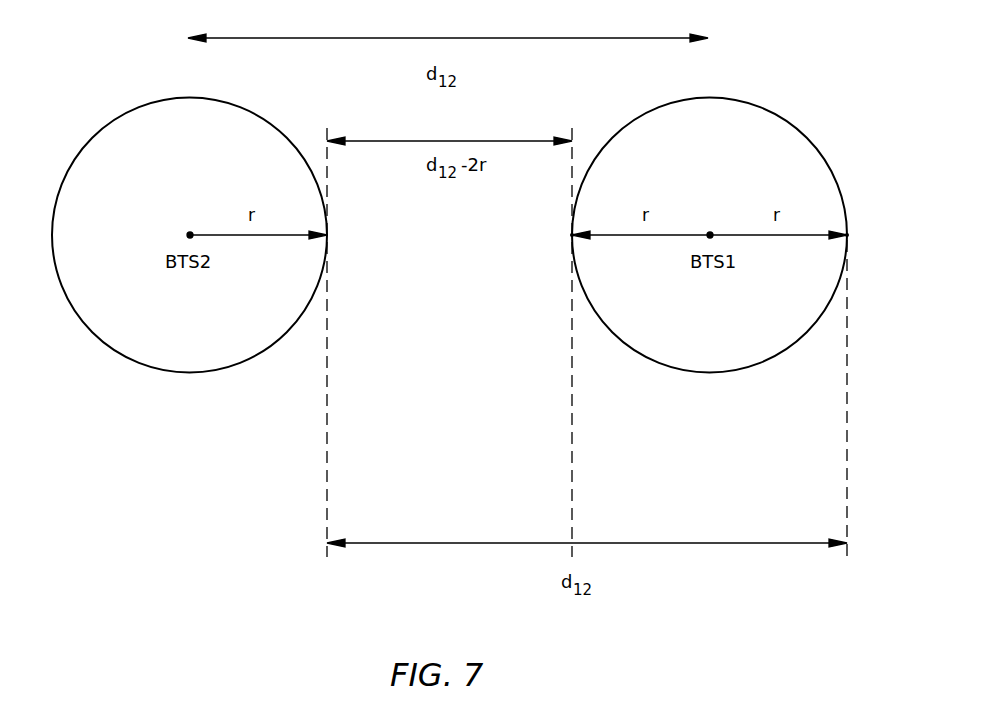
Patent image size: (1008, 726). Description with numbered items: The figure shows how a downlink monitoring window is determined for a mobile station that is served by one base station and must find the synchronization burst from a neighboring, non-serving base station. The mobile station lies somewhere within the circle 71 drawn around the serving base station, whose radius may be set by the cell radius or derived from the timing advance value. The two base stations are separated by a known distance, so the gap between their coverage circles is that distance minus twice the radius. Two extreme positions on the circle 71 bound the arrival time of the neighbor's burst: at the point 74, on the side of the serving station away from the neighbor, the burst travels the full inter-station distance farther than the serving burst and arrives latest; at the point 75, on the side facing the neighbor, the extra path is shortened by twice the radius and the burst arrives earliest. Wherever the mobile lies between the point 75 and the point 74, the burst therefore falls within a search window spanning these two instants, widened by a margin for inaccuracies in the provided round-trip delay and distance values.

The circle 71 is at (802, 96).
The extreme position of mobile station farthest from BTS2 74 is at (858, 228).
The extreme position of mobile station nearest to BTS2 75 is at (564, 248).